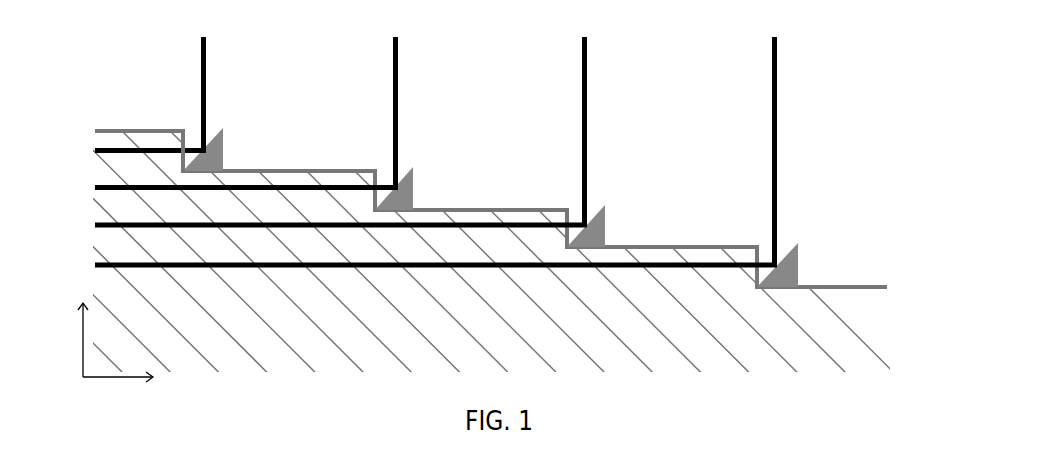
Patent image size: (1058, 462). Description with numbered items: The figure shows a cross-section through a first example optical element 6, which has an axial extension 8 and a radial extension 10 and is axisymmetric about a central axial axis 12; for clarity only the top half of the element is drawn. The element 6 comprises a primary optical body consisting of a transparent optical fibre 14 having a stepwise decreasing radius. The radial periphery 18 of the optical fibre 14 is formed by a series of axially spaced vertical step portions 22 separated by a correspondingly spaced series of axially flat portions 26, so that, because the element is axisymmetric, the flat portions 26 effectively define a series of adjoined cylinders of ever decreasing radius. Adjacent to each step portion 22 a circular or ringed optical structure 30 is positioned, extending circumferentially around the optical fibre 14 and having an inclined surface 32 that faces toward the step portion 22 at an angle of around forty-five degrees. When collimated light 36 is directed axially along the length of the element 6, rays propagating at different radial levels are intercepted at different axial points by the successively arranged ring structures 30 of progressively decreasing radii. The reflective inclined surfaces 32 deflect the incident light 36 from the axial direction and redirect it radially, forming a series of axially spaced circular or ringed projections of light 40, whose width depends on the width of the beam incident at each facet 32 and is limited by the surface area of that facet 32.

The optical element 6 is at (851, 117).
The axial extension 8 is at (118, 387).
The radial extension 10 is at (70, 340).
The central axial axis 12 is at (903, 372).
The transparent optical fibre 14 is at (752, 358).
The radial periphery 18 is at (900, 285).
The step portion 22 is at (182, 112).
The flat portion 26 is at (142, 130).
The ringed optical structure 30 is at (226, 148).
The inclined surface 32 is at (215, 130).
The collimated light 36 is at (97, 148).
The projections of light 40 is at (205, 62).